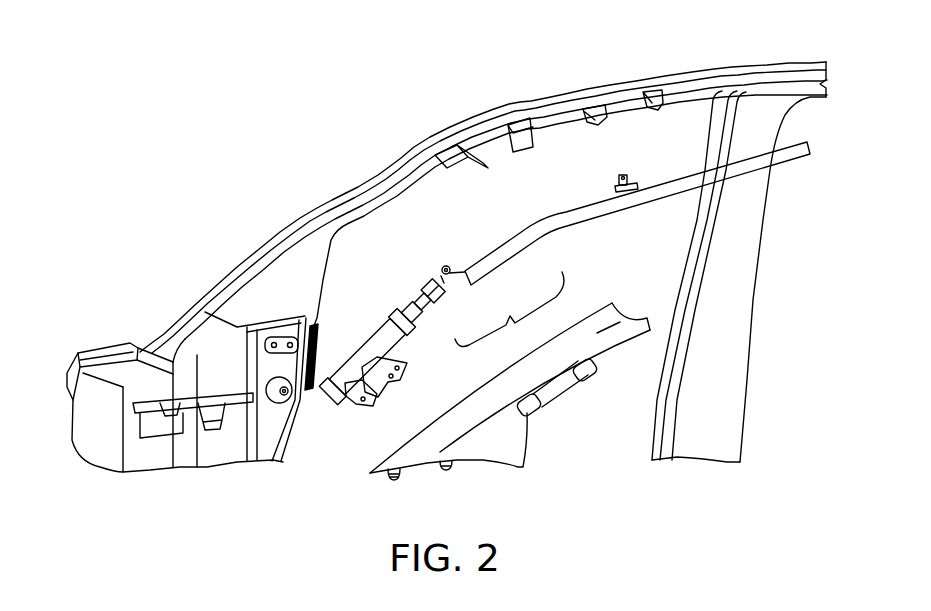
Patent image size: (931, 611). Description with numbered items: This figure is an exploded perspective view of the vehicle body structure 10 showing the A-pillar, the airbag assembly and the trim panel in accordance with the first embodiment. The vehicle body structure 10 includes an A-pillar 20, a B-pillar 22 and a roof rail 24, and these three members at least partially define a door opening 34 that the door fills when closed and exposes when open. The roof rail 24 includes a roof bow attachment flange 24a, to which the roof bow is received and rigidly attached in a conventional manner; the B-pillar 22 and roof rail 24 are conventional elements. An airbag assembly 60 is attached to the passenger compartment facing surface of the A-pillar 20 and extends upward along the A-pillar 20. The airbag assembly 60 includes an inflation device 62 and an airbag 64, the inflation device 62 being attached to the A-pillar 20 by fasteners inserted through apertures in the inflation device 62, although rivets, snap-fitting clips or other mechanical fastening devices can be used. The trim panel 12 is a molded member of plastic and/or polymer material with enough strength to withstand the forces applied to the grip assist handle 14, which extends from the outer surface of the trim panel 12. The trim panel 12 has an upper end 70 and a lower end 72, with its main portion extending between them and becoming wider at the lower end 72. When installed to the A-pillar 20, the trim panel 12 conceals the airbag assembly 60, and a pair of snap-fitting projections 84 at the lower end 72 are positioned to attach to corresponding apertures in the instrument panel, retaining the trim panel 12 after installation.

The vehicle body structure 10 is at (371, 134).
The trim panel 12 is at (499, 391).
The grip assist handle 14 is at (567, 398).
The A-pillar 20 is at (348, 192).
The B-pillar 22 is at (729, 306).
The roof rail 24 is at (586, 124).
The roof bow attachment flange 24a is at (494, 153).
The door opening 34 is at (325, 283).
The airbag assembly 60 is at (564, 274).
The inflation device 62 is at (423, 318).
The airbag 64 is at (488, 271).
The upper end 70 is at (622, 311).
The lower end 72 is at (483, 464).
The snap-fitting projection 84 is at (443, 469).